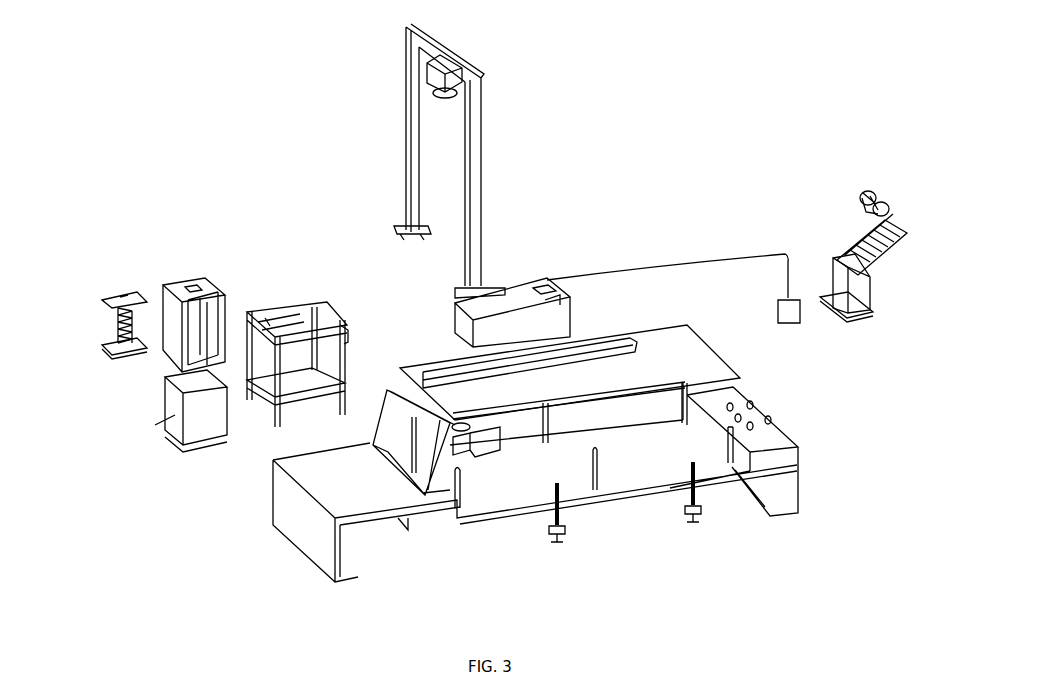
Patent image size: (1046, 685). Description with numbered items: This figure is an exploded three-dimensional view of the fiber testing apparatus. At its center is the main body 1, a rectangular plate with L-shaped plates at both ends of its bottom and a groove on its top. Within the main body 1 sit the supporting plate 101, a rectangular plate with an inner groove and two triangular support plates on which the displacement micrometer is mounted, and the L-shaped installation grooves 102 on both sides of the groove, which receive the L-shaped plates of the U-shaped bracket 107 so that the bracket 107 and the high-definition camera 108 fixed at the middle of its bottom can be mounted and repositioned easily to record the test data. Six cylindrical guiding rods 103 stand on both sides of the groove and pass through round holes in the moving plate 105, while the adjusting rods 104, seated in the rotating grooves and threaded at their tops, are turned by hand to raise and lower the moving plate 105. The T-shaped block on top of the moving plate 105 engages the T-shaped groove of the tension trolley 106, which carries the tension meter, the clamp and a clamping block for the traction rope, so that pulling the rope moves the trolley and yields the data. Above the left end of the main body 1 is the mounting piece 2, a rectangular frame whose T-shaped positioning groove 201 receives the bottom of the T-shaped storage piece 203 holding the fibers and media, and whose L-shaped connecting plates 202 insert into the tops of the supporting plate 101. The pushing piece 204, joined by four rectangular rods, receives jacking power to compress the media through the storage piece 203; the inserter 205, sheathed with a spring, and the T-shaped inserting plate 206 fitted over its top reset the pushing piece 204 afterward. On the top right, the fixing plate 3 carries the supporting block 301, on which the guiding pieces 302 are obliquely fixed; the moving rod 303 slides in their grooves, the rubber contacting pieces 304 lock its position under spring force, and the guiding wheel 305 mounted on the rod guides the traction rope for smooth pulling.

The main body 1 is at (300, 537).
The supporting plate 101 is at (441, 480).
The installation groove 102 is at (602, 497).
The guiding rod 103 is at (590, 490).
The adjusting rod 104 is at (695, 513).
The moving plate 105 is at (705, 360).
The tension trolley 106 is at (503, 320).
The bracket 107 is at (477, 207).
The high-definition camera 108 is at (455, 62).
The mounting piece 2 is at (281, 397).
The positioning groove 201 is at (258, 400).
The connecting plate 202 is at (348, 342).
The storage piece 203 is at (173, 413).
The pushing piece 204 is at (215, 295).
The inserter 205 is at (117, 355).
The inserting plate 206 is at (113, 305).
The fixing plate 3 is at (868, 258).
The supporting block 301 is at (855, 290).
The guiding piece 302 is at (883, 263).
The moving rod 303 is at (893, 213).
The contacting piece 304 is at (880, 202).
The guiding wheel 305 is at (866, 207).